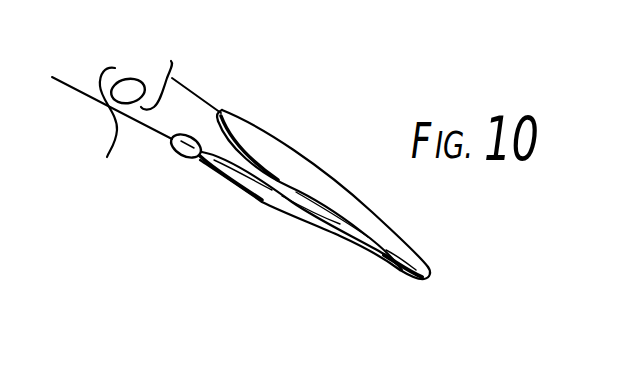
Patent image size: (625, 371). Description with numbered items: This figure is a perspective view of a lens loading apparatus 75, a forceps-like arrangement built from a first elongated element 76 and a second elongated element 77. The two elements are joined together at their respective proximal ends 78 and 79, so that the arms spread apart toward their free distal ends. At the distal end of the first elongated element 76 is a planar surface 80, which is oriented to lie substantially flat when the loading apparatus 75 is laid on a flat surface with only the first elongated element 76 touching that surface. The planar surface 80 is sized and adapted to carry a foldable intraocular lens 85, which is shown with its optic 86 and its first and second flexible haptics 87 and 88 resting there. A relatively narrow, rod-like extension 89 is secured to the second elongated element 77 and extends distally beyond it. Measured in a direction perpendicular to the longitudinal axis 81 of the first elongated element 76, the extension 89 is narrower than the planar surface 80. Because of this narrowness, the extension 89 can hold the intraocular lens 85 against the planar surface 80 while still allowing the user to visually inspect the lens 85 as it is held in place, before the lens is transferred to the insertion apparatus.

The lens loading apparatus 75 is at (308, 84).
The first elongated element 76 is at (268, 197).
The second elongated element 77 is at (301, 175).
The proximal end of first elongated element 78 is at (398, 276).
The proximal end of second elongated element 79 is at (414, 262).
The planar surface 80 is at (178, 157).
The longitudinal axis 81 is at (68, 82).
The foldable intraocular lens 85 is at (99, 123).
The optic 86 is at (140, 84).
The first flexible haptic 87 is at (117, 126).
The second flexible haptic 88 is at (174, 74).
The rod-like extension 89 is at (196, 95).